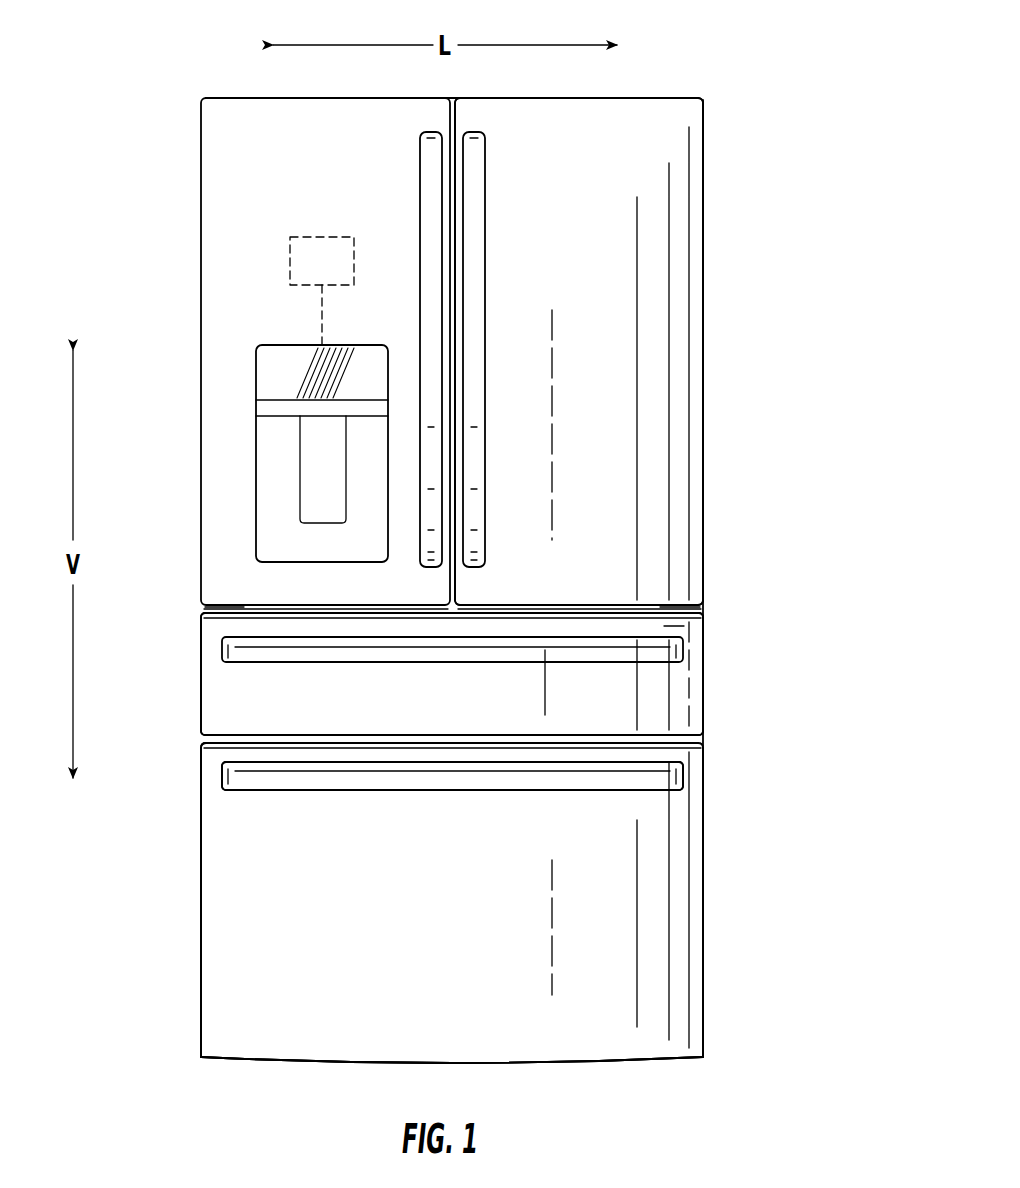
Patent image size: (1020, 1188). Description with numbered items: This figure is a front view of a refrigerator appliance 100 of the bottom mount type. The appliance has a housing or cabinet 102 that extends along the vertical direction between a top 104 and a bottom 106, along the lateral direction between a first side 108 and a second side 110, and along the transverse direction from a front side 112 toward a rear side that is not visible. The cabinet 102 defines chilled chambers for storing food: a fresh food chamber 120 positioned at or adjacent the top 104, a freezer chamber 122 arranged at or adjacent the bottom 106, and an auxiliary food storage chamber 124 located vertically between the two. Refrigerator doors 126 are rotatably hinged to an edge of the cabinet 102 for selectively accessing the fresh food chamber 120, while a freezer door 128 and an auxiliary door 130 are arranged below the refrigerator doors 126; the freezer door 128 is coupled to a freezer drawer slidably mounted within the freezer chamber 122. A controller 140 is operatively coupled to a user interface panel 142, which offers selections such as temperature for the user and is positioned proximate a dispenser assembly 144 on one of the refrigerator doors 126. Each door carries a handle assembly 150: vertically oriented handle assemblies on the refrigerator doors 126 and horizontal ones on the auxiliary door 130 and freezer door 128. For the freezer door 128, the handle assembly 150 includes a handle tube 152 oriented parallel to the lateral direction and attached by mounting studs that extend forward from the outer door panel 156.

The refrigerator appliance 100 is at (177, 80).
The cabinet 102 is at (705, 447).
The top 104 is at (738, 97).
The bottom 106 is at (715, 1060).
The first side 108 is at (195, 1000).
The second side 110 is at (707, 910).
The front side 112 is at (617, 530).
The fresh food chamber 120 is at (637, 150).
The freezer chamber 122 is at (605, 1018).
The auxiliary food storage chamber 124 is at (205, 646).
The refrigerator doors 126 is at (227, 152).
The freezer door 128 is at (293, 922).
The auxiliary door 130 is at (668, 688).
The controller 140 is at (290, 264).
The user interface panel 142 is at (267, 367).
The dispenser assembly 144 is at (278, 483).
The handle assembly 150 is at (402, 157).
The handle tube 152 is at (470, 780).
The outer door panel 156 is at (272, 1037).